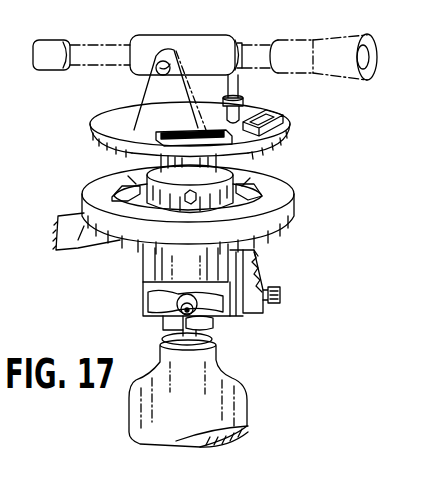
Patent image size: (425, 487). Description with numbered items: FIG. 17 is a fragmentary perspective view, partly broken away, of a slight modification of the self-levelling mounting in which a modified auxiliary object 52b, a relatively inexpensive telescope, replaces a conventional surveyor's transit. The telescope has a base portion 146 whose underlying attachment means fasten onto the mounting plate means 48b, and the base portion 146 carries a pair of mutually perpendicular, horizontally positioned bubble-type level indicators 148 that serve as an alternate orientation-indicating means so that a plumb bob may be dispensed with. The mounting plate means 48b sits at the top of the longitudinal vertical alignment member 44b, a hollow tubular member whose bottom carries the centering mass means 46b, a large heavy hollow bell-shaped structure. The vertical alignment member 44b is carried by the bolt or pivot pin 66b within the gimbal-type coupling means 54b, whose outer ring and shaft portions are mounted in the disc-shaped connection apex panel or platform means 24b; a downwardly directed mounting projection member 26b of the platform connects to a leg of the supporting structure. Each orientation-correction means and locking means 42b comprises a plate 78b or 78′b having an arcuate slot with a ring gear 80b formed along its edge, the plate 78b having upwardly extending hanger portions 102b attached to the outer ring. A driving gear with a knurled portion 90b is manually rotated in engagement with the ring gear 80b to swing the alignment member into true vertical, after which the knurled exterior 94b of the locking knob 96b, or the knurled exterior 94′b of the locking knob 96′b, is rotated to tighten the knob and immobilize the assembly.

The auxiliary object 52b is at (110, 66).
The base portion 146 is at (105, 118).
The bubble-type level indicators 148 is at (280, 116).
The mounting plate means 48b is at (154, 160).
The gimbal-type coupling means 54b is at (133, 182).
The bolt or pivot pin 66b is at (198, 212).
The connection apex panel or platform means 24b is at (296, 214).
The hanger portions 102b is at (150, 256).
The mounting projection member 26b is at (78, 242).
The plate 78b is at (150, 274).
The knurled portion 90b is at (150, 302).
The longitudinal vertical alignment member 44b is at (172, 322).
The ring gear 80b is at (228, 314).
The locking knob 96b is at (163, 338).
The knurled exterior 94b is at (212, 335).
The knurled exterior 94′b is at (318, 264).
The locking knob 96′b is at (280, 292).
The plate 78′b is at (258, 308).
The orientation-correction means and locking means 42b is at (222, 352).
The centering mass means 46b is at (250, 397).